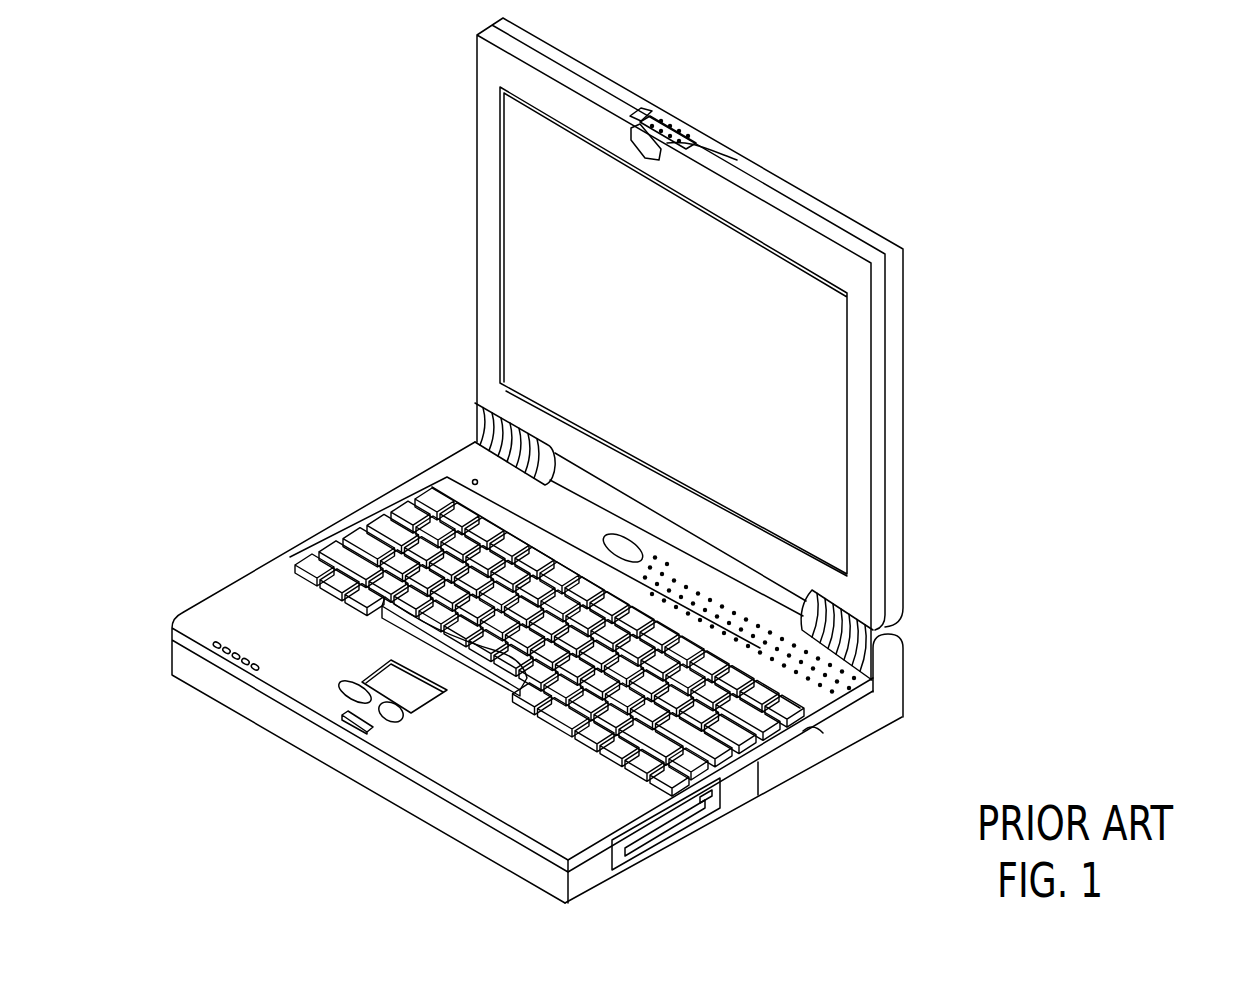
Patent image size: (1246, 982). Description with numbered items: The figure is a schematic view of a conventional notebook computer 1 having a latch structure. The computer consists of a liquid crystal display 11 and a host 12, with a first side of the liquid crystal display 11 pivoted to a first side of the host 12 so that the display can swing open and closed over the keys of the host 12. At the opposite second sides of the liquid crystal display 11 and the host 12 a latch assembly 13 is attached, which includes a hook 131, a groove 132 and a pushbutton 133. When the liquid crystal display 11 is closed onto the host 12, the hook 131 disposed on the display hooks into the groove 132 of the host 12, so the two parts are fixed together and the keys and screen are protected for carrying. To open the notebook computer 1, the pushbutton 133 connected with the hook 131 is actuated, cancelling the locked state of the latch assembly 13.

The notebook computer 1 is at (158, 138).
The liquid crystal display 11 is at (393, 145).
The host 12 is at (810, 816).
The latch assembly 13 is at (1165, 235).
The hook 131 is at (723, 162).
The groove 132 is at (355, 722).
The pushbutton 133 is at (656, 120).